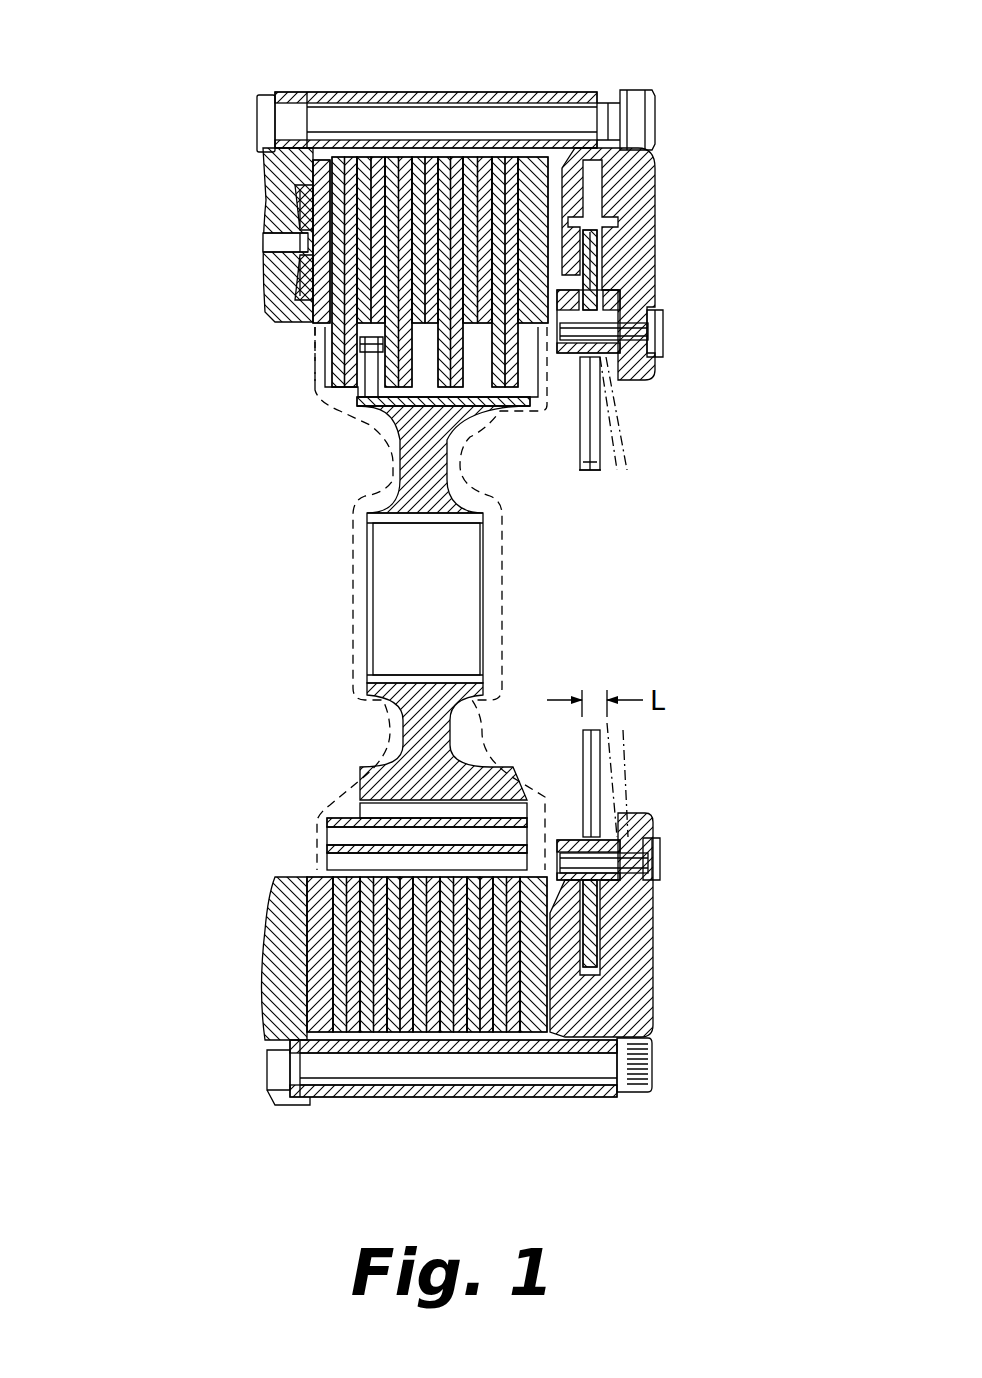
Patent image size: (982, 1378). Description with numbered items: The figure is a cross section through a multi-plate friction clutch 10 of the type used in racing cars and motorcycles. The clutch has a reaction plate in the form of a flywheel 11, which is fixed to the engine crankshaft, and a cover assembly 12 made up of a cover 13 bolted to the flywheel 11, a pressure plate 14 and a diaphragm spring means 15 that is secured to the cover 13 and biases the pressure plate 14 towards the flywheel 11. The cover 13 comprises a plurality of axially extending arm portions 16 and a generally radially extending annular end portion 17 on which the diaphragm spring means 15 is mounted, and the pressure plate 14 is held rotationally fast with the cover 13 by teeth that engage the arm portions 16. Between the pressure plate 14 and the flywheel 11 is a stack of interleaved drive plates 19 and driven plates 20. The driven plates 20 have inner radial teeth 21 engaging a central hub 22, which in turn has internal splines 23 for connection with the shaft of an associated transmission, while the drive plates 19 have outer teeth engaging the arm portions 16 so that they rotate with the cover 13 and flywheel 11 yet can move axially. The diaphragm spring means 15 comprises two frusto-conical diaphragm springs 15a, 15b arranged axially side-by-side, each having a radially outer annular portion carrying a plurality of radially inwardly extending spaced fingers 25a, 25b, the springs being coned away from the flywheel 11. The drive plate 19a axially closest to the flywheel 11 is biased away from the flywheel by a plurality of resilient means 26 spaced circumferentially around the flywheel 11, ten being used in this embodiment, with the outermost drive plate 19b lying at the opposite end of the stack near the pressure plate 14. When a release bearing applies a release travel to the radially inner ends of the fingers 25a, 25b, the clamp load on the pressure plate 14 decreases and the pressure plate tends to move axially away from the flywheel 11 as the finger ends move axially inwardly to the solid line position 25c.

The multi-plate friction clutch 10 is at (160, 115).
The flywheel 11 is at (275, 322).
The cover assembly 12 is at (722, 103).
The cover 13 is at (650, 182).
The pressure plate 14 is at (575, 970).
The diaphragm spring means 15 is at (638, 778).
The diaphragm spring 15a is at (597, 273).
The diaphragm spring 15b is at (590, 292).
The arm portions 16 is at (537, 1097).
The annular end portion 17 is at (655, 243).
The drive plates 19 is at (530, 168).
The drive plate 19a is at (320, 168).
The drive plate 19b is at (547, 170).
The driven plates 20 is at (503, 1028).
The inner radial teeth 21 is at (445, 393).
The central hub 22 is at (483, 678).
The internal splines 23 is at (393, 522).
The spring fingers 25a is at (597, 403).
The spring fingers 25b is at (587, 427).
The solid line position 25c is at (590, 472).
The resilient means 26 is at (293, 200).